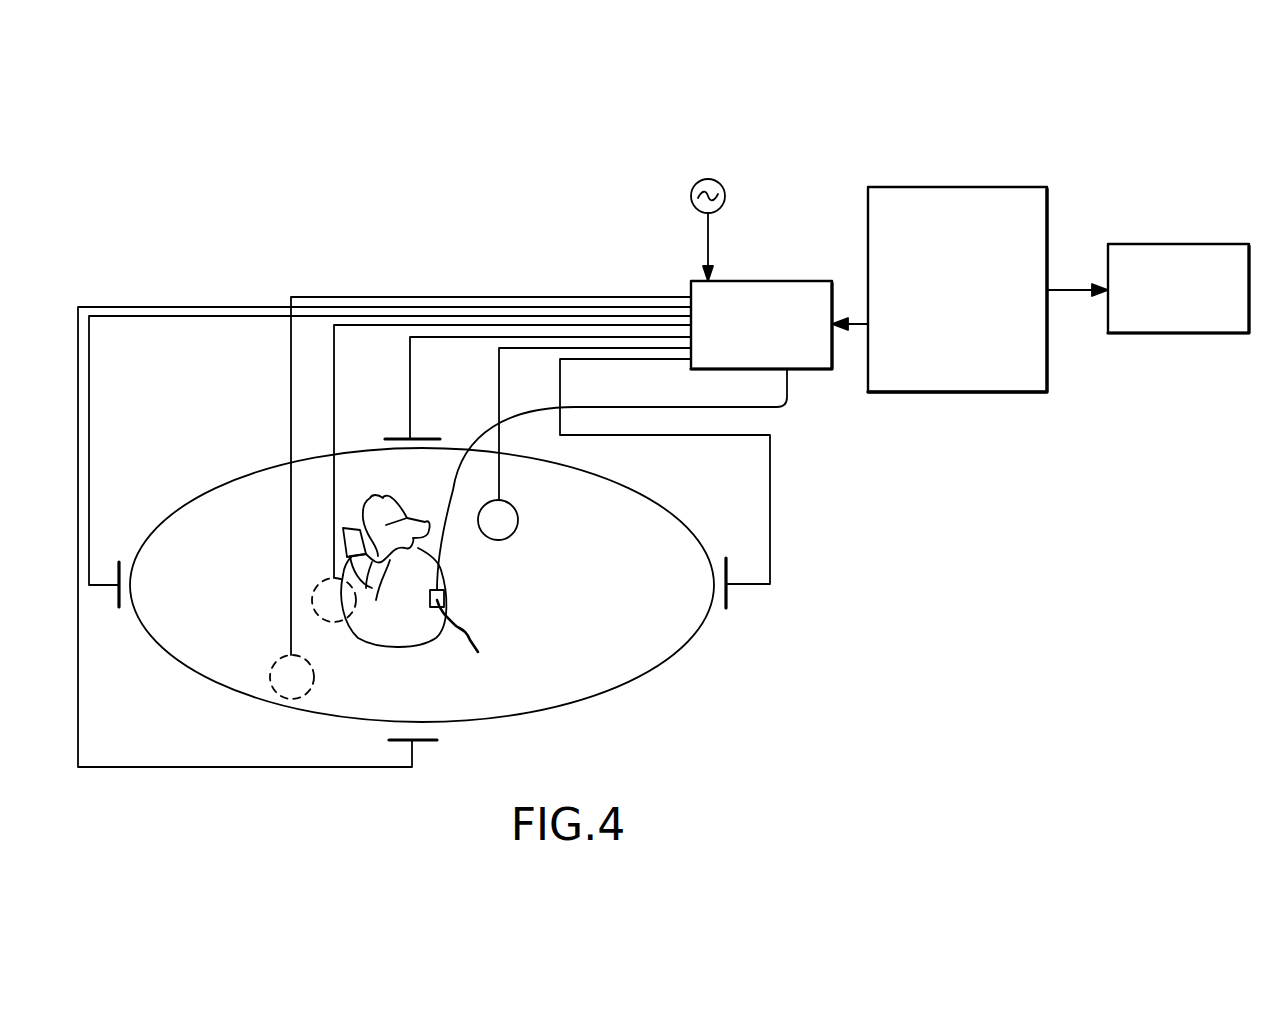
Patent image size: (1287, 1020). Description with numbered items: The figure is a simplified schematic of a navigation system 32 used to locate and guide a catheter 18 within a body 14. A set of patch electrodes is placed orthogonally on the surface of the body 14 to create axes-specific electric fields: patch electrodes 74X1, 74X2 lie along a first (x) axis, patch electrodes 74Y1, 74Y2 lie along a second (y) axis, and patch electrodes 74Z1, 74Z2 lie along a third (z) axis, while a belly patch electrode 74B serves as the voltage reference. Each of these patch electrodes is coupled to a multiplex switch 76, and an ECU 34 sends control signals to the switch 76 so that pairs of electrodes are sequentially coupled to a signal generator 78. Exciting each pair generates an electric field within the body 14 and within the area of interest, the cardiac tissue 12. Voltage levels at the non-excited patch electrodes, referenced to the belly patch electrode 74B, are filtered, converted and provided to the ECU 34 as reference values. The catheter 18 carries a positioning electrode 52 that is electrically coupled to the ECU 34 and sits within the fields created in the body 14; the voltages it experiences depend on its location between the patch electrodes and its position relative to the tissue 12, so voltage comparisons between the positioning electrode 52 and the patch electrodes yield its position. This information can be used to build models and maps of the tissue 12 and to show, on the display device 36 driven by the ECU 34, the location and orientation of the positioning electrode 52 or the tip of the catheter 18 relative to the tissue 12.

The tissue 12 is at (444, 595).
The body 14 is at (637, 488).
The catheter 18 is at (790, 400).
The system 32 is at (379, 222).
The ECU 34 is at (959, 187).
The display device 36 is at (1178, 244).
The positioning electrode 52 is at (467, 640).
The belly patch electrode 74B is at (292, 618).
The patch electrode 74X1 is at (400, 438).
The patch electrode 74X2 is at (415, 745).
The patch electrode 74Y1 is at (120, 607).
The patch electrode 74Y2 is at (730, 598).
The patch electrode 74Z1 is at (334, 522).
The patch electrode 74Z2 is at (503, 481).
The multiplex switch 76 is at (761, 325).
The signal generator 78 is at (693, 187).